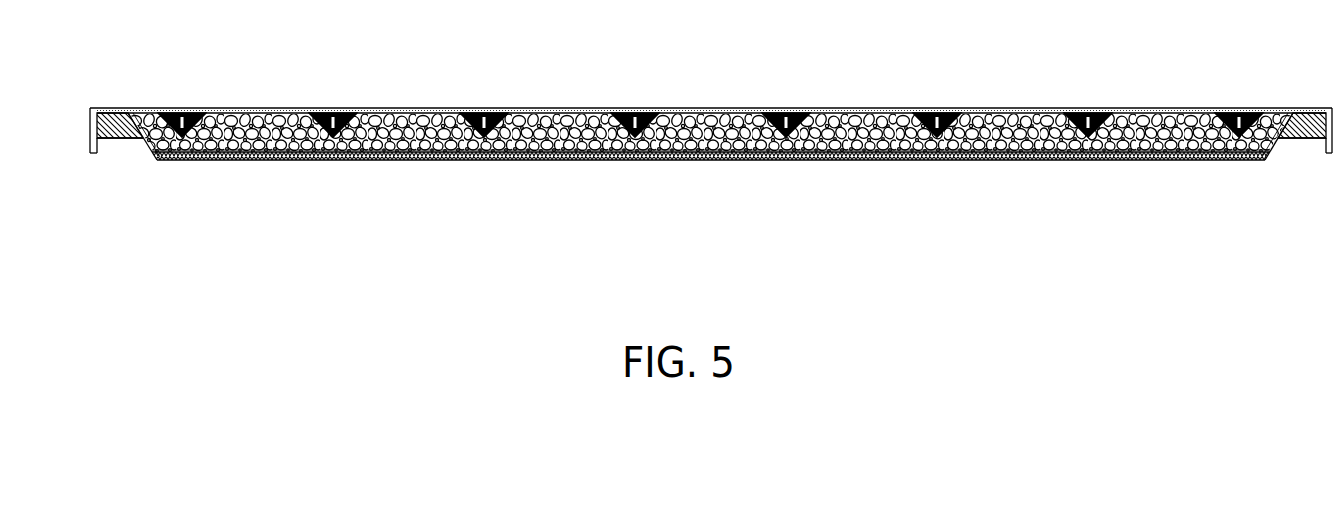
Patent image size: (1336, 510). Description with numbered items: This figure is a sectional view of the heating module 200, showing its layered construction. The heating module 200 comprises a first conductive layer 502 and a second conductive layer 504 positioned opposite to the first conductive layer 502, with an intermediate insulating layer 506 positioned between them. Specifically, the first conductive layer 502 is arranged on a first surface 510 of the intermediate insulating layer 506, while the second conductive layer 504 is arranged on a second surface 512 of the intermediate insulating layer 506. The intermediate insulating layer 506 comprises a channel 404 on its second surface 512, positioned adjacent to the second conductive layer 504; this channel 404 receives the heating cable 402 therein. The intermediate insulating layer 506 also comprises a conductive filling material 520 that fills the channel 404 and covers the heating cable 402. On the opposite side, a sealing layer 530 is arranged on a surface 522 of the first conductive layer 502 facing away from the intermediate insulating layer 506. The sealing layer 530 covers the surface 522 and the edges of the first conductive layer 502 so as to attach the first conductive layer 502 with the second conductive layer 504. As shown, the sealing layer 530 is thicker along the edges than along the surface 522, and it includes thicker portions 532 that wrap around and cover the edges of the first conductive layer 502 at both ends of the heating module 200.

The heating module 200 is at (1121, 72).
The heating cable 402 is at (784, 116).
The channel 404 is at (710, 170).
The first conductive layer 502 is at (711, 180).
The second conductive layer 504 is at (711, 100).
The intermediate insulating layer 506 is at (737, 138).
The first surface 510 is at (711, 186).
The second surface 512 is at (711, 80).
The conductive filling material 520 is at (710, 93).
The surface 522 is at (711, 187).
The sealing layer 530 is at (711, 188).
The thicker portions 532 is at (696, 168).